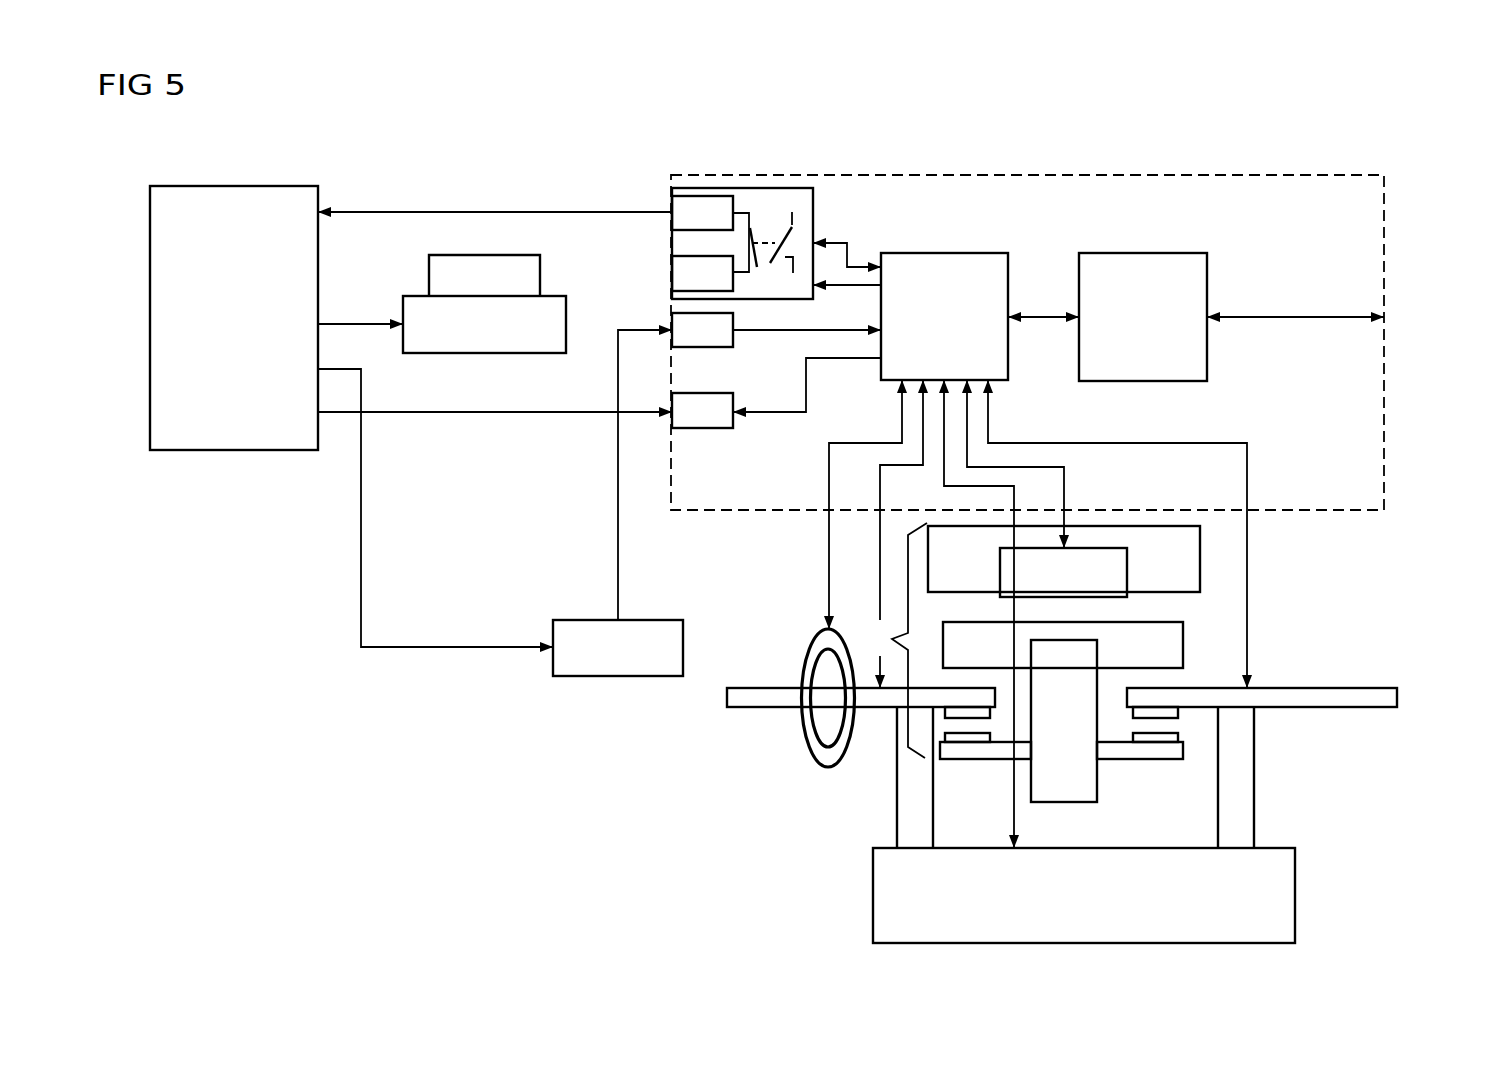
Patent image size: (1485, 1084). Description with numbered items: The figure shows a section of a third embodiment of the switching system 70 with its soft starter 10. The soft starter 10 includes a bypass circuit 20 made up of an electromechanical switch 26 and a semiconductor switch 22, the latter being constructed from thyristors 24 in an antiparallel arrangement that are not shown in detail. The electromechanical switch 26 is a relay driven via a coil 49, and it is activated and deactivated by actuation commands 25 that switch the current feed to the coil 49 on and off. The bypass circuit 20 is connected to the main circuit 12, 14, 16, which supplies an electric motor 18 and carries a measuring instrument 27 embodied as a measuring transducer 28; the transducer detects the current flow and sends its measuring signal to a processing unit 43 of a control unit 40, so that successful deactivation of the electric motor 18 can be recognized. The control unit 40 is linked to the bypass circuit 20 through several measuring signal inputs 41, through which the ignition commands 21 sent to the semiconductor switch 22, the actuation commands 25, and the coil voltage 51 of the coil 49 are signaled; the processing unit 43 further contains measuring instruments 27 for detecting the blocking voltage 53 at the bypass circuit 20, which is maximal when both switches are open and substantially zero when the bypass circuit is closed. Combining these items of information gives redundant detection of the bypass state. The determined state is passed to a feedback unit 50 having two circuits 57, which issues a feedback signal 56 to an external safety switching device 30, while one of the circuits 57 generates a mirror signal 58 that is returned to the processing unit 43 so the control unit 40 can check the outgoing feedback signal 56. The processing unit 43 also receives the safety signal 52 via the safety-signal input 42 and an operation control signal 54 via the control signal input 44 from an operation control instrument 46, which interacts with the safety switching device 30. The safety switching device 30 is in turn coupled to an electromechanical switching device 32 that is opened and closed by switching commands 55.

The soft starter 10 is at (1339, 130).
The main circuit 12 is at (840, 735).
The main circuit 14 is at (840, 735).
The main circuit 16 is at (752, 707).
The electric motor 18 is at (1075, 693).
The bypass circuit 20 is at (1143, 825).
The ignition commands 21 is at (1014, 805).
The semiconductor switch 22 is at (1141, 895).
The thyristors 24 is at (1295, 900).
The actuation commands 25 is at (1066, 477).
The electromechanical switch 26 is at (1021, 662).
The measuring instrument 27 is at (821, 733).
The measuring transducer 28 is at (828, 767).
The safety switching device 30 is at (225, 186).
The electromechanical switching device 32 is at (487, 254).
The control unit 40 is at (1033, 175).
The measuring signal inputs 41 is at (1036, 614).
The safety-signal input 42 is at (700, 428).
The processing unit 43 is at (940, 253).
The control signal input 44 is at (700, 347).
The operation control instrument 46 is at (618, 676).
The coil 49 is at (1198, 557).
The feedback unit 50 is at (718, 187).
The coil voltage 51 is at (1067, 500).
The safety signal 52 is at (490, 414).
The blocking voltage 53 is at (880, 588).
The operation control signal 54 is at (361, 532).
The switching commands 55 is at (347, 324).
The feedback signal 56 is at (440, 212).
The circuits 57 is at (777, 253).
The mirror signal 58 is at (833, 245).
The switching system 70 is at (1403, 173).